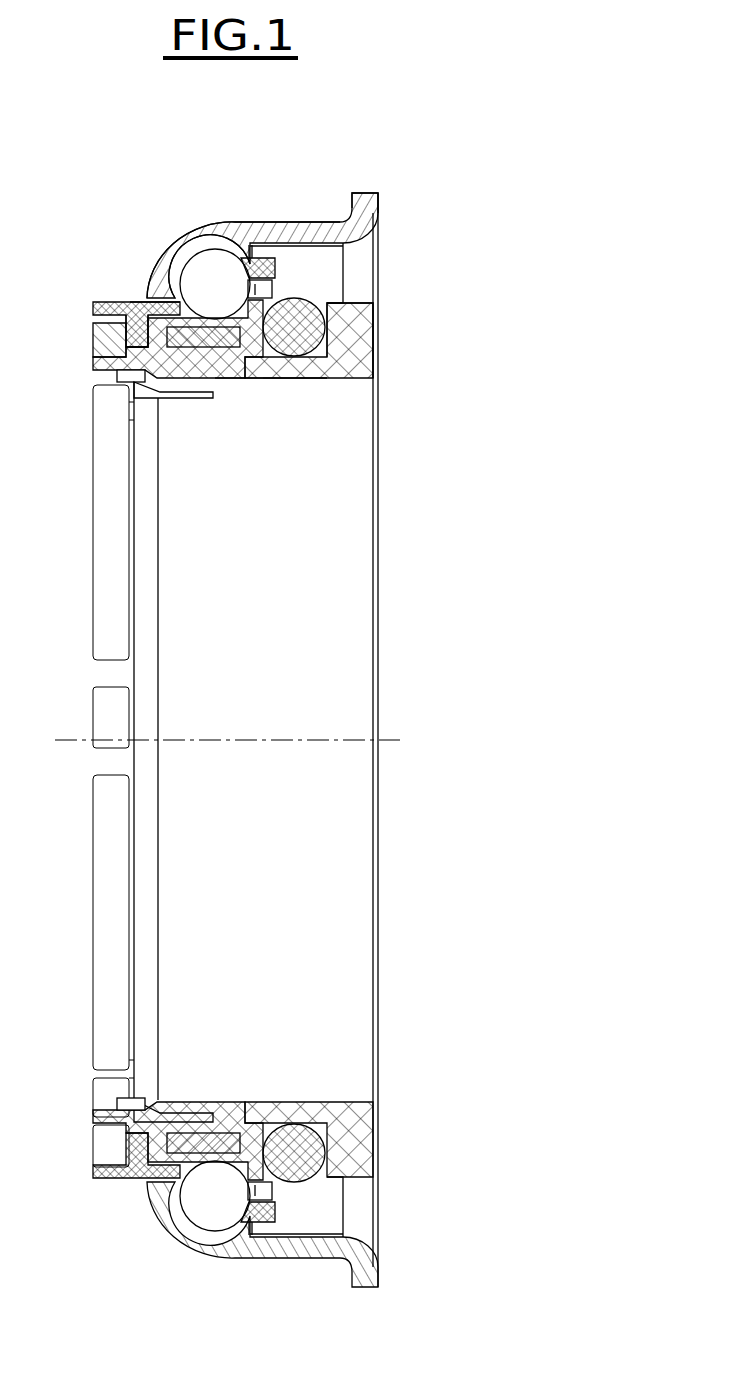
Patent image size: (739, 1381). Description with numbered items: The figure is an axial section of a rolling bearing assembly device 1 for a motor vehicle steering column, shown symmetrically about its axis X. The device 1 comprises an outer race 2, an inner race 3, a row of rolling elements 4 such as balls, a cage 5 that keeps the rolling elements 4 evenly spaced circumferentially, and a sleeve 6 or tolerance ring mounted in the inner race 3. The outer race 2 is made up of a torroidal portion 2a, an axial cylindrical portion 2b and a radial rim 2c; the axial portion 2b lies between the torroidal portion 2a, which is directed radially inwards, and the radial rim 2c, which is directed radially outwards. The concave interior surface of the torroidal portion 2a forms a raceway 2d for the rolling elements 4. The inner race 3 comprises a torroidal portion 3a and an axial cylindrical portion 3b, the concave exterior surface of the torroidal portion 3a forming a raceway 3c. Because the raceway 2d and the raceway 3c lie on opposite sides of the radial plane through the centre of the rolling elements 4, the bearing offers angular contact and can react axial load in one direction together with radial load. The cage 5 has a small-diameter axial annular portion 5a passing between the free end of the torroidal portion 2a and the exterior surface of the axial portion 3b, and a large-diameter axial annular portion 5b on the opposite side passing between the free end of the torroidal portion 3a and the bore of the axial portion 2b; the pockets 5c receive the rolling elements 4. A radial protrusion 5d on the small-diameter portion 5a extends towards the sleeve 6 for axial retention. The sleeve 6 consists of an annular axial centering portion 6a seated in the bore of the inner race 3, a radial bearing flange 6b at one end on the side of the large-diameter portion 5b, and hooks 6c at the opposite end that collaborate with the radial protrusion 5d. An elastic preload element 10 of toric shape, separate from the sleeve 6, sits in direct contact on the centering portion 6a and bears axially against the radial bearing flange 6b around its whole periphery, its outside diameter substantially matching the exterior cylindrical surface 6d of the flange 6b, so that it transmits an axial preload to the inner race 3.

The rolling bearing assembly device 1 is at (433, 185).
The outer race 2 is at (263, 222).
The torroidal portion 2a is at (160, 262).
The axial portion 2b is at (330, 222).
The radial rim 2c is at (365, 193).
The raceway 2d is at (193, 265).
The inner race 3 is at (280, 290).
The torroidal portion 3a is at (252, 380).
The axial cylindrical portion 3b is at (193, 400).
The raceway 3c is at (227, 380).
The rolling elements 4 is at (222, 301).
The cage 5 is at (110, 300).
The axial annular portion of small diameter 5a is at (152, 302).
The axial annular portion of large diameter 5b is at (290, 243).
The pockets 5c is at (238, 262).
The radial protrusion 5d is at (118, 310).
The sleeve 6 is at (379, 356).
The annular axial centering portion 6a is at (283, 380).
The radial bearing flange 6b is at (365, 330).
The hooks 6c is at (100, 355).
The exterior cylindrical surface 6d is at (342, 302).
The elastic preload element 10 is at (300, 300).